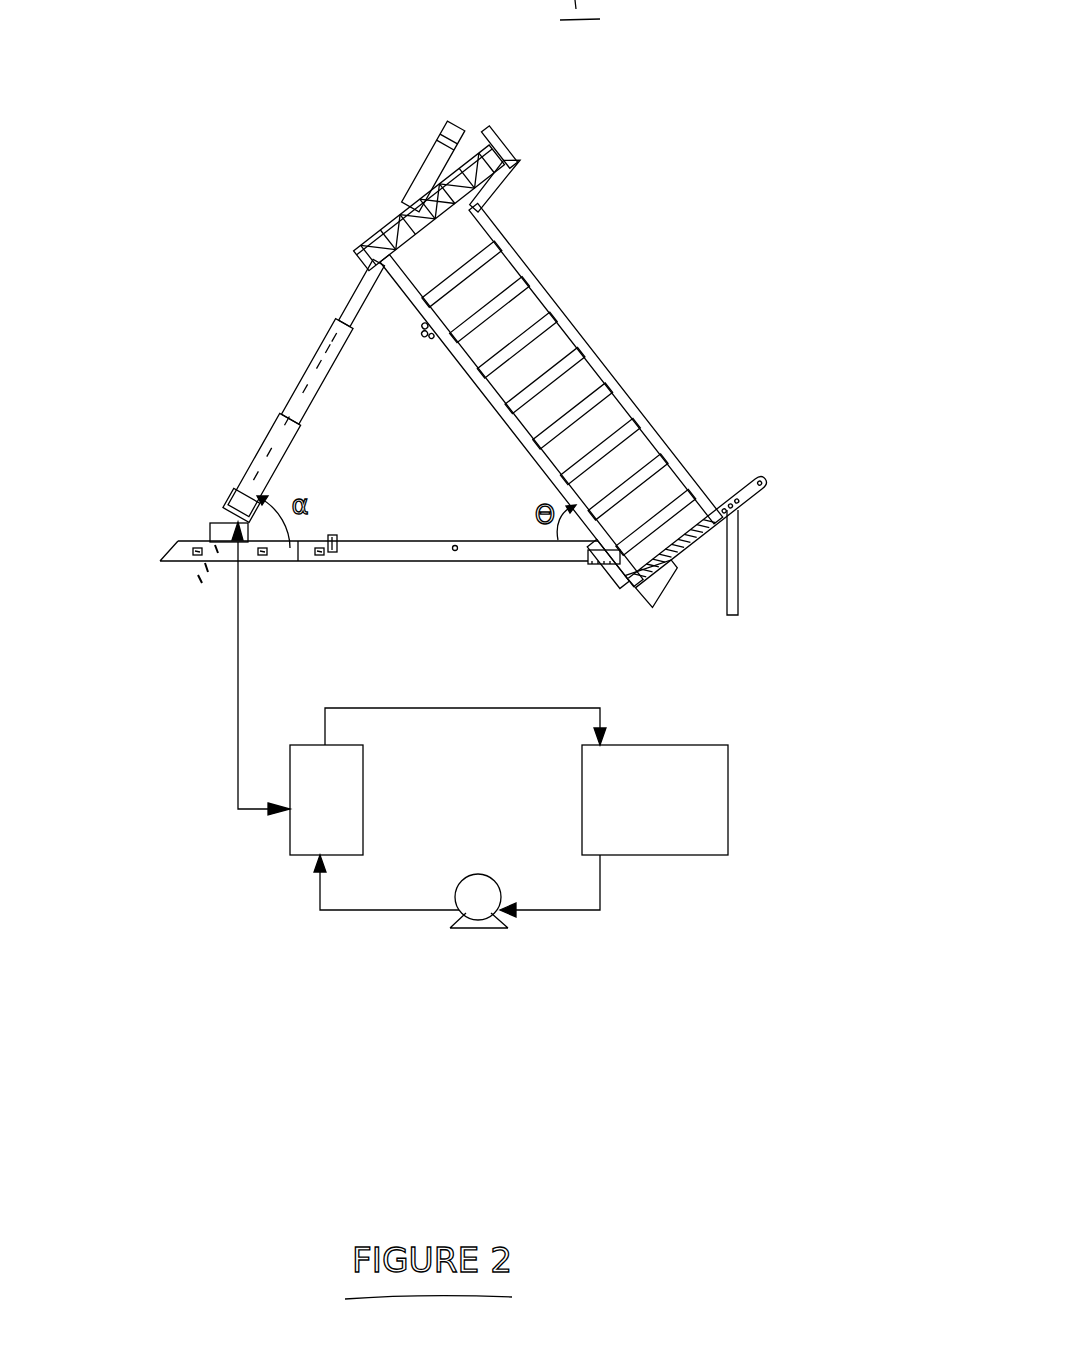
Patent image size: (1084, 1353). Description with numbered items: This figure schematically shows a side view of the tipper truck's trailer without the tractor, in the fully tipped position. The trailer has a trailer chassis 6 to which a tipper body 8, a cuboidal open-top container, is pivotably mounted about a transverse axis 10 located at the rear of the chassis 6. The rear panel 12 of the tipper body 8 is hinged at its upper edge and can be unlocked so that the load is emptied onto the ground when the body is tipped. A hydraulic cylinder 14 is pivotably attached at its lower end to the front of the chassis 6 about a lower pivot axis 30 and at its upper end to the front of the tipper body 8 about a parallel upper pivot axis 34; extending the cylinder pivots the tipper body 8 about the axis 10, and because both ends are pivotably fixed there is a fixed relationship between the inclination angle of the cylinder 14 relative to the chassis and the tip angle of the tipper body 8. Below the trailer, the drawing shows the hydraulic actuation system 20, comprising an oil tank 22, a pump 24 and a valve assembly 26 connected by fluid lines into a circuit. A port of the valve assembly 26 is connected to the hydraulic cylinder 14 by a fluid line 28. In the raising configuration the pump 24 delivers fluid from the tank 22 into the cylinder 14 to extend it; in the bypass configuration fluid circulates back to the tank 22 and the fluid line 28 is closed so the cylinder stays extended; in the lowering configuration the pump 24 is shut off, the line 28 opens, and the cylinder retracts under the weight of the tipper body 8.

The trailer chassis 6 is at (396, 548).
The tipper body 8 is at (610, 333).
The transverse axis 10 is at (618, 542).
The rear panel 12 is at (738, 567).
The hydraulic cylinder 14 is at (310, 350).
The hydraulic actuation system 20 is at (506, 972).
The oil tank 22 is at (728, 805).
The pump 24 is at (483, 873).
The valve assembly 26 is at (298, 857).
The fluid line 28 is at (238, 720).
The lower pivot axis 30 is at (227, 525).
The upper pivot axis 34 is at (395, 222).